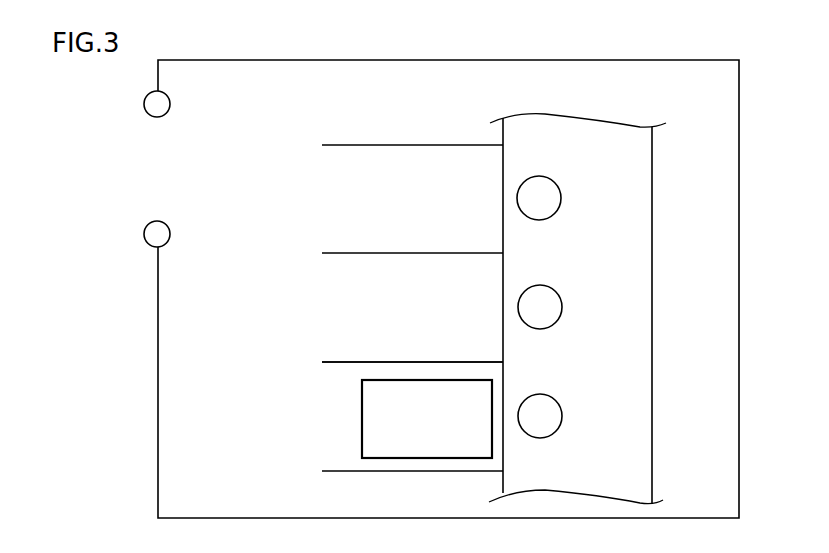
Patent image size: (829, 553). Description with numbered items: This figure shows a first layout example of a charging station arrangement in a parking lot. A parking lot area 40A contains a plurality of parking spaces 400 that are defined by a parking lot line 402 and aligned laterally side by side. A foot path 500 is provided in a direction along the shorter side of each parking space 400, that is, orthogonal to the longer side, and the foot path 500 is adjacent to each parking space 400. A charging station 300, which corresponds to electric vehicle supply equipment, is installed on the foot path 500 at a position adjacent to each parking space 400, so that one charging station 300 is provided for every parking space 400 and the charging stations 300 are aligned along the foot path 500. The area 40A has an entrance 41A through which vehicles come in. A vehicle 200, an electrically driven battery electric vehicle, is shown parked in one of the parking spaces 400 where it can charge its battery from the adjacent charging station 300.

The parking lot area 40A is at (684, 60).
The entrance 41A is at (156, 172).
The foot path 500 is at (528, 127).
The charging station 300 is at (553, 178).
The parking space 400 is at (330, 167).
The parking lot line 402 is at (403, 360).
The vehicle 200 is at (362, 416).